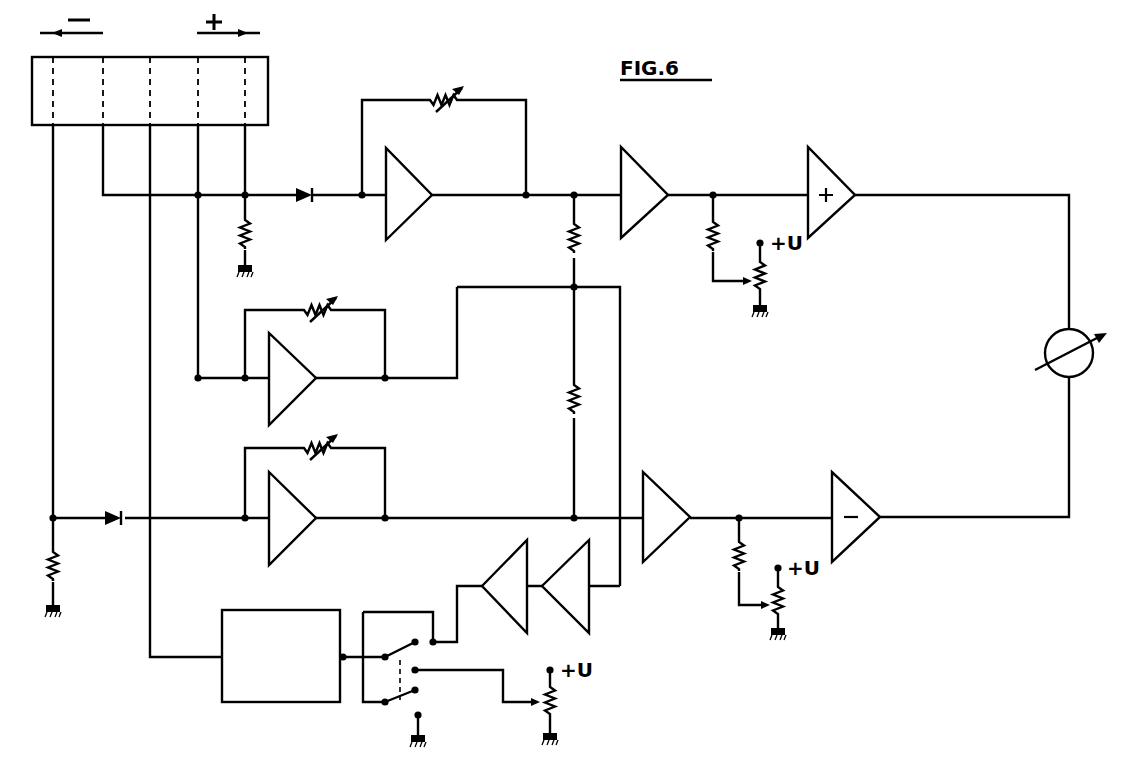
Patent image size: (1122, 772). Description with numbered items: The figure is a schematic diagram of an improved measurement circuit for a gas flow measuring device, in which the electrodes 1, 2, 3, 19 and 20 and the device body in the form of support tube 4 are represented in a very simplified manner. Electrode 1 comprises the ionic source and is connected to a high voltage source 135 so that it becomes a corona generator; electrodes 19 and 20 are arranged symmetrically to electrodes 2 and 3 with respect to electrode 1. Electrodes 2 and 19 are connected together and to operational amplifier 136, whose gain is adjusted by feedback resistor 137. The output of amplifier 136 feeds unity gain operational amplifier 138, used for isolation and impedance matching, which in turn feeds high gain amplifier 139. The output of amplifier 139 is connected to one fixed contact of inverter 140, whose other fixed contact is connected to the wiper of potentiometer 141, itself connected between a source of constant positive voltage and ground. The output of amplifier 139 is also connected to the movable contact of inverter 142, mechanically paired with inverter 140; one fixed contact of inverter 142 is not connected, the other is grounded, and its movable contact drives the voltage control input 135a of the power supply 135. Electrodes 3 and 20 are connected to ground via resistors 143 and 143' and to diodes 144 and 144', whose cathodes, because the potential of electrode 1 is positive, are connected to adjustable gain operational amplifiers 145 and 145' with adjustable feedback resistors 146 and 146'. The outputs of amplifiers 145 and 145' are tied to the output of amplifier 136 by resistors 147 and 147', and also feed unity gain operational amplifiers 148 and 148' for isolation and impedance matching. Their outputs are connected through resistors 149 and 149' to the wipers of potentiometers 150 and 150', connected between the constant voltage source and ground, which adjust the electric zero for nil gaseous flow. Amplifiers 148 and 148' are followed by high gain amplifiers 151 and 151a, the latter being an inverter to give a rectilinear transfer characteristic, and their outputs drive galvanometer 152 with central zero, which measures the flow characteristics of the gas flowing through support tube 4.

The support tube 4 is at (144, 56).
The electrode 20 is at (51, 125).
The electrode 19 is at (102, 125).
The electrode 1 is at (149, 125).
The electrode 2 is at (199, 125).
The electrode 3 is at (246, 125).
The resistor 143 is at (272, 247).
The diode 144 is at (316, 178).
The adjustable gain operational amplifier 145 is at (424, 198).
The adjustable feedback resistor 146 is at (449, 85).
The resistor 147 is at (548, 237).
The resistor 147' is at (547, 397).
The unity gain operational amplifier 148 is at (652, 183).
The resistor 149 is at (689, 236).
The potentiometer 150 is at (785, 288).
The high gain amplifier 151 is at (834, 172).
The galvanometer 152 is at (1048, 342).
The feedback resistor 137 is at (318, 304).
The operational amplifier 136 is at (298, 376).
The diode 144' is at (114, 496).
The resistor 143' is at (79, 583).
The adjustable feedback resistor 146' is at (334, 459).
The adjustable gain operational amplifier 145' is at (311, 518).
The unity gain operational amplifier 148' is at (680, 517).
The resistor 149' is at (717, 555).
The potentiometer 150' is at (805, 612).
The high gain amplifier 151a is at (864, 502).
The high gain amplifier 139 is at (499, 567).
The unity gain operational amplifier 138 is at (561, 567).
The high voltage source 135 is at (250, 608).
The voltage control input 135a is at (343, 652).
The inverter 140 is at (398, 637).
The inverter 142 is at (383, 705).
The potentiometer 141 is at (558, 706).